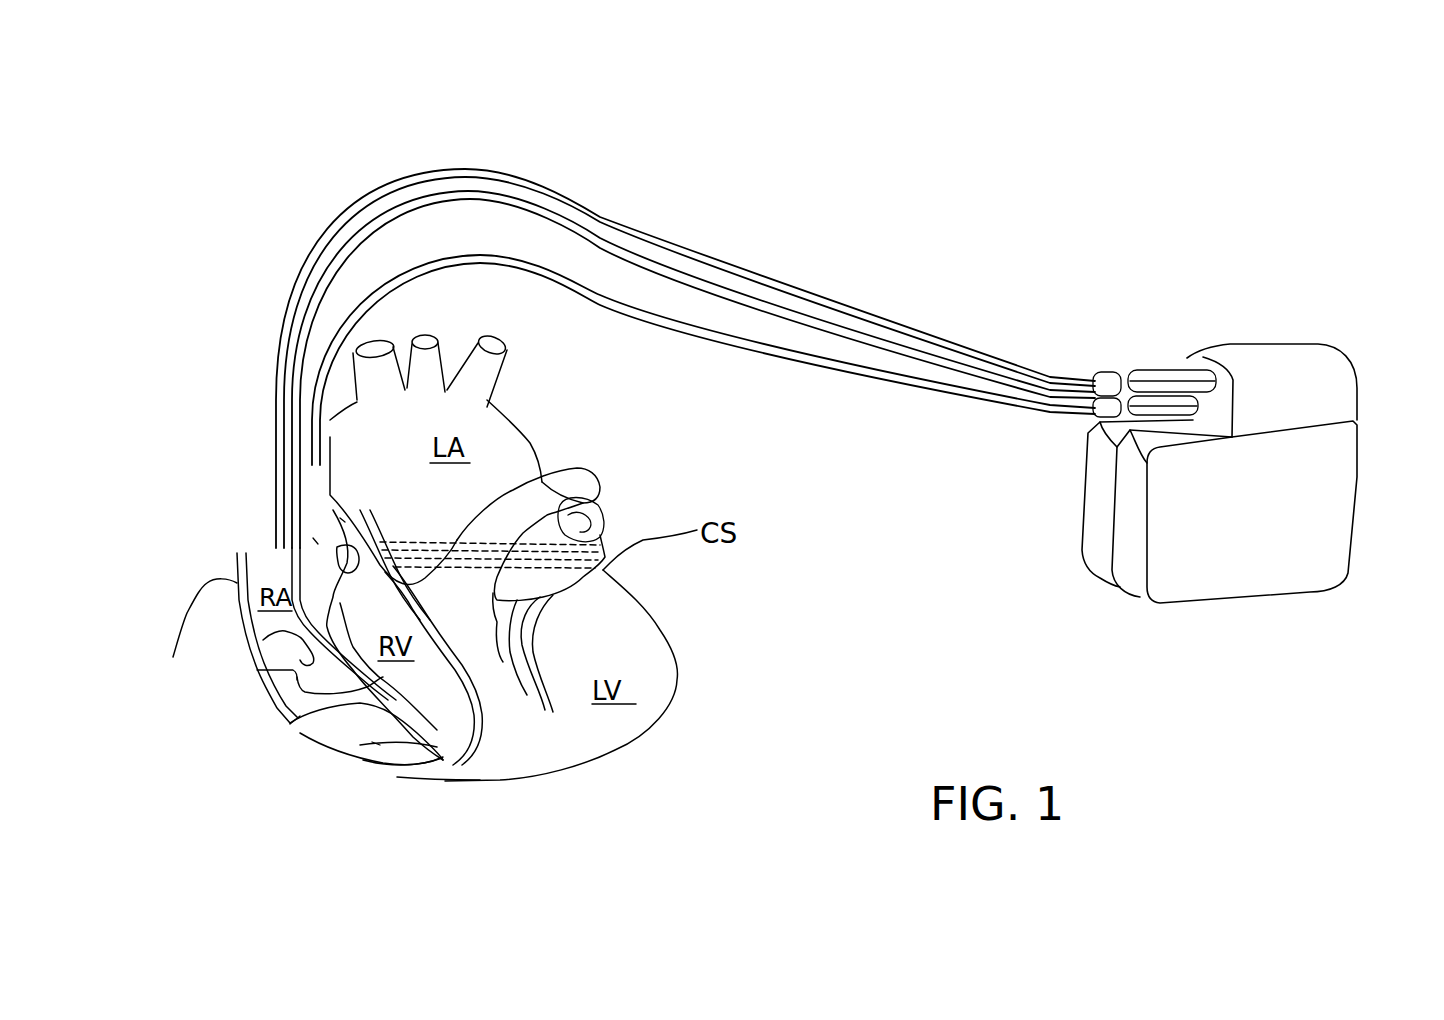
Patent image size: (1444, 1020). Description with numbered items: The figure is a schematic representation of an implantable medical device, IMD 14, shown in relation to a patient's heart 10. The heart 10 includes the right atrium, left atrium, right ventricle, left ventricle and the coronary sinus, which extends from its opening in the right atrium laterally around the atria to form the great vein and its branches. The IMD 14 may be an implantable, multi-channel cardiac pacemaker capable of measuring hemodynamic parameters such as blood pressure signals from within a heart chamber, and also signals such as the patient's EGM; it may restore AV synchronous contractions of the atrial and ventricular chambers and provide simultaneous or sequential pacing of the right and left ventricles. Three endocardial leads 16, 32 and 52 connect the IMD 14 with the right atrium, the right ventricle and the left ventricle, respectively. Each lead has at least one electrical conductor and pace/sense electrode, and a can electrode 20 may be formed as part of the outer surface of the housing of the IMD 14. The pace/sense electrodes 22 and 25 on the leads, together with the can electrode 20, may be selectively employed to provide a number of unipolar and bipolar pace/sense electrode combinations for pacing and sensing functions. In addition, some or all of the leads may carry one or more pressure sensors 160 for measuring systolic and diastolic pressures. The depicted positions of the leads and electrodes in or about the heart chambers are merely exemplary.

The heart 10 is at (757, 728).
The IMD 14 is at (1405, 495).
The endocardial lead 16 is at (528, 179).
The can electrode 20 is at (1223, 572).
The pace/sense electrode 22 is at (345, 520).
The pace/sense electrode 25 is at (313, 540).
The endocardial lead 32 is at (582, 228).
The endocardial lead 52 is at (800, 363).
The pressure sensor 160 is at (257, 670).